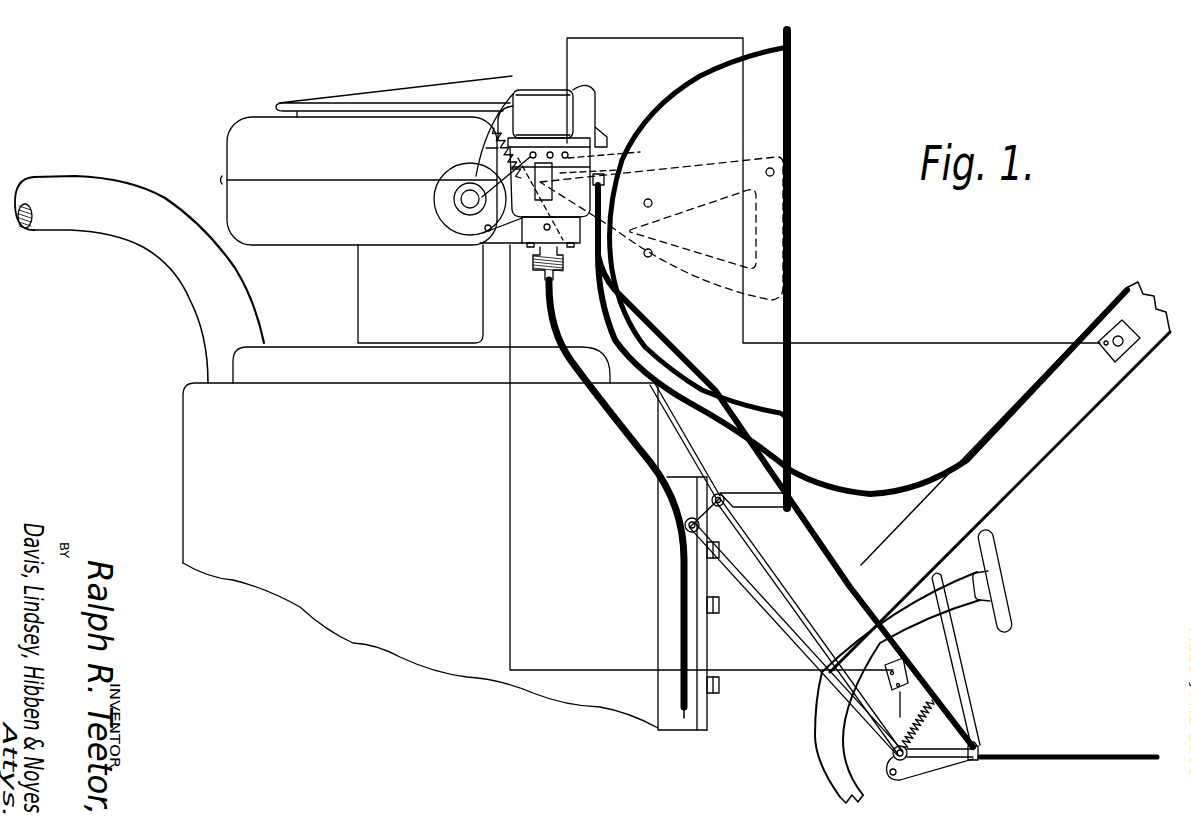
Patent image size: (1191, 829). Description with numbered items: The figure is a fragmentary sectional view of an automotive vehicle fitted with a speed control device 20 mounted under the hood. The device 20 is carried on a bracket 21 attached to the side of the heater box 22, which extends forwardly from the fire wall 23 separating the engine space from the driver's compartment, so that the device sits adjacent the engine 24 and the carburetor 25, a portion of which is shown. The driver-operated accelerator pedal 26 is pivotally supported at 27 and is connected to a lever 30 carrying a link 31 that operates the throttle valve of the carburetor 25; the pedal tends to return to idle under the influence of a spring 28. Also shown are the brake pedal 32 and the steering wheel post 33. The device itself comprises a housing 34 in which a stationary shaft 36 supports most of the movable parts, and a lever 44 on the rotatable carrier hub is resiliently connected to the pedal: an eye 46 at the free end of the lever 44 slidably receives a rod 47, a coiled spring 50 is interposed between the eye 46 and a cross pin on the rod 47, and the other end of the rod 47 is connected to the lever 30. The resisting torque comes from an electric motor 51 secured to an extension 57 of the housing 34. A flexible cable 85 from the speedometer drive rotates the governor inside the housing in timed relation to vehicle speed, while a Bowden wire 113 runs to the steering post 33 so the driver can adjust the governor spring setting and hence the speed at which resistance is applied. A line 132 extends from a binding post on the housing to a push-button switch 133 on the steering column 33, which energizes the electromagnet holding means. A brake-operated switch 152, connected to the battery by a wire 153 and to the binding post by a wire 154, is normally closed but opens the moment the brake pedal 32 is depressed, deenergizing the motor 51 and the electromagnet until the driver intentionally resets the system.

The speed control device 20 is at (602, 76).
The bracket 21 is at (702, 183).
The heater box 22 is at (673, 87).
The fire wall 23 is at (792, 118).
The engine 24 is at (197, 425).
The carburetor 25 is at (358, 288).
The accelerator pedal 26 is at (965, 668).
The pivotal support 27 is at (975, 762).
The spring 28 is at (920, 717).
The lever 30 is at (930, 756).
The link 31 is at (762, 600).
The brake pedal 32 is at (997, 582).
The steering wheel post 33 is at (1067, 417).
The housing 34 is at (537, 97).
The stationary shaft 36 is at (598, 174).
The lever 44 is at (614, 153).
The eye 46 is at (549, 162).
The rod 47 is at (767, 557).
The coiled spring 50 is at (530, 152).
The electric motor 51 is at (445, 197).
The housing extension 57 is at (493, 142).
The flexible cable 85 is at (617, 437).
The Bowden wire 113 is at (737, 440).
The line 132 is at (570, 57).
The push-button switch 133 is at (1133, 342).
The brake-operated switch 152 is at (928, 658).
The wire 153 is at (900, 712).
The wire 154 is at (563, 673).